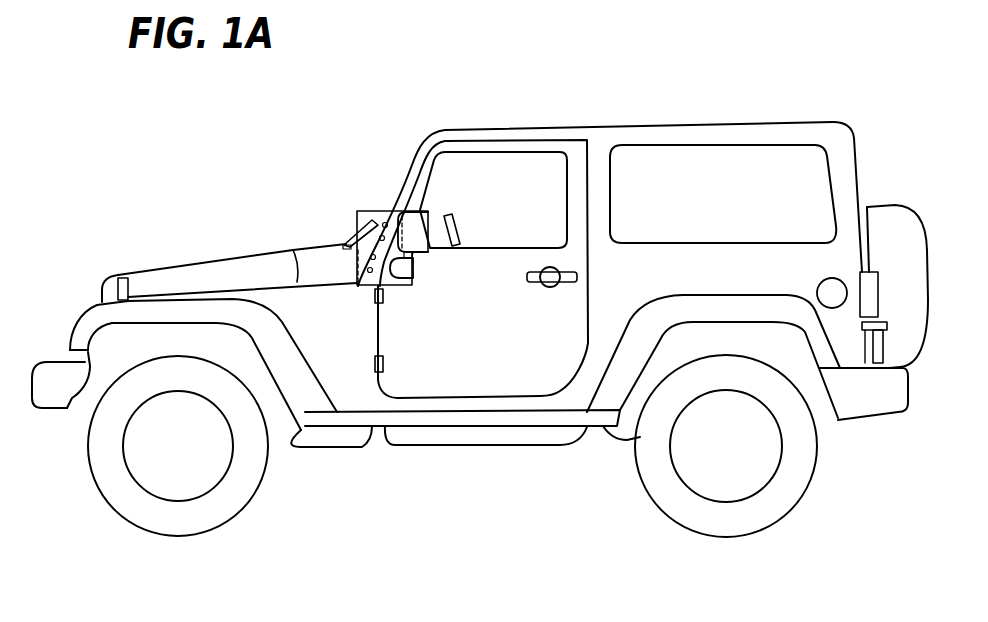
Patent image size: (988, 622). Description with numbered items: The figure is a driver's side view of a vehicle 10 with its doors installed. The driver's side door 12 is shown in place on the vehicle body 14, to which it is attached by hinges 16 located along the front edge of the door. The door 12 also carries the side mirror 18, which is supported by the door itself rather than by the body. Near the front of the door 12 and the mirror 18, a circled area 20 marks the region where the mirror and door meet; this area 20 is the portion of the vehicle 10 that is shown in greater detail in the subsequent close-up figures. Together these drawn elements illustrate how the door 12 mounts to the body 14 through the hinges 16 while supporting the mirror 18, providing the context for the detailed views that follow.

The vehicle 10 is at (300, 144).
The driver's side door 12 is at (573, 152).
The vehicle body 14 is at (310, 300).
The hinges 16 is at (384, 299).
The side mirror 18 is at (415, 188).
The circled area 20 is at (372, 210).